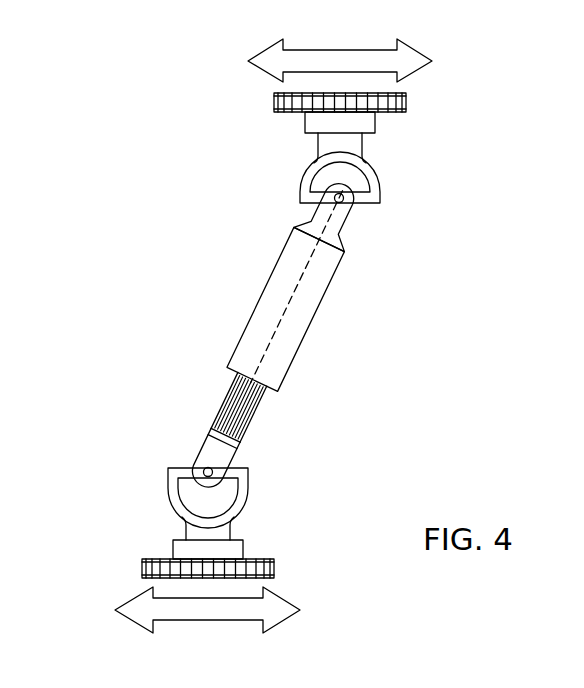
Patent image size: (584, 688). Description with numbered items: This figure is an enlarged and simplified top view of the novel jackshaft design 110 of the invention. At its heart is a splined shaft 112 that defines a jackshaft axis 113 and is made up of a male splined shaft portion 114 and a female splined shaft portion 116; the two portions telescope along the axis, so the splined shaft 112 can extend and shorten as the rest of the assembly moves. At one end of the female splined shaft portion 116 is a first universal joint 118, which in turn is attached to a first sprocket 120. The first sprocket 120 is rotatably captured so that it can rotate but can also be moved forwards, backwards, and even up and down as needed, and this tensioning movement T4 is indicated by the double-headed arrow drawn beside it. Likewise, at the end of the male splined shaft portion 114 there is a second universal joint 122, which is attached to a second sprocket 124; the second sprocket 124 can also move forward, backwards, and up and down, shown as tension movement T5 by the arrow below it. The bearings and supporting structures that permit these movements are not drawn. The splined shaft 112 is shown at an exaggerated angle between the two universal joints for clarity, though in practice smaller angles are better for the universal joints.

The jackshaft design 110 is at (72, 262).
The splined shaft 112 is at (354, 335).
The jackshaft axis 113 is at (282, 320).
The male splined shaft portion 114 is at (260, 410).
The female splined shaft portion 116 is at (323, 272).
The first universal joint 118 is at (380, 200).
The first sprocket 120 is at (406, 102).
The second universal joint 122 is at (168, 470).
The second sprocket 124 is at (142, 567).
The tensioning movement T4 is at (345, 57).
The tension movement T5 is at (215, 613).